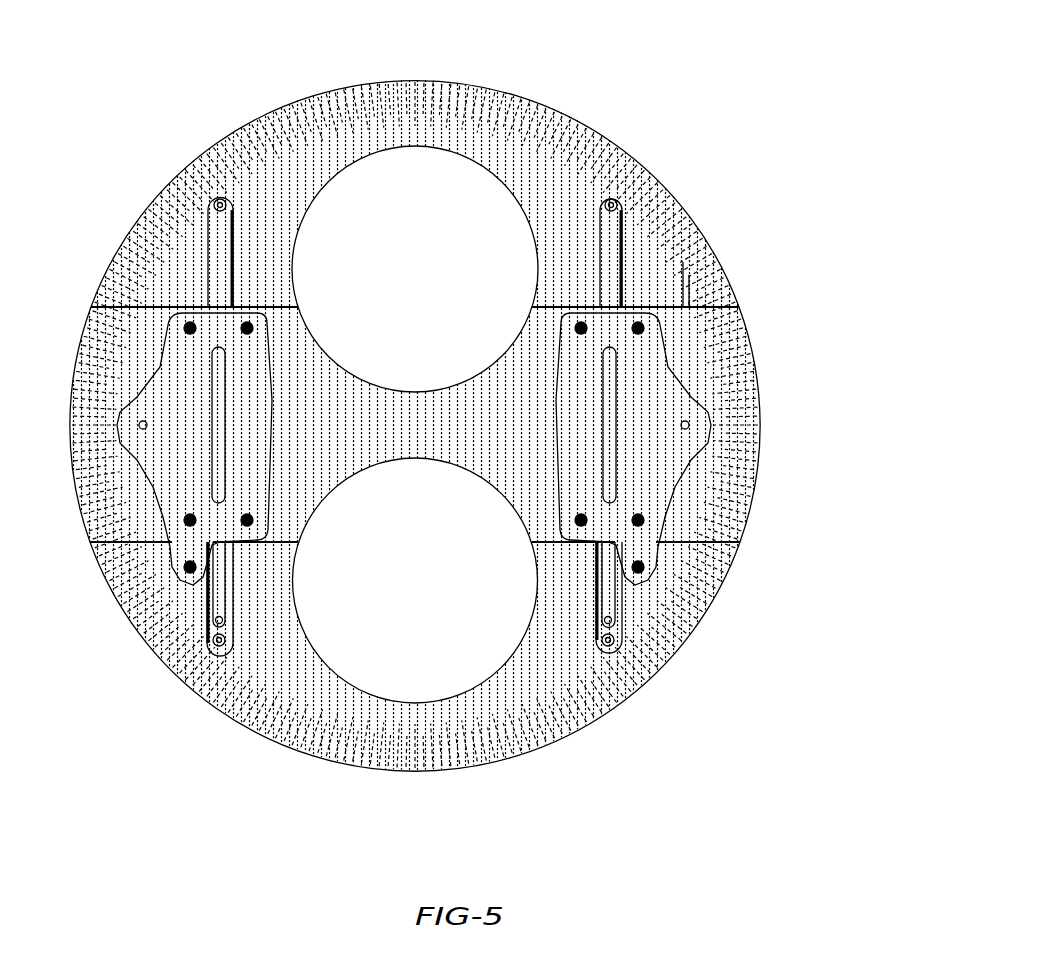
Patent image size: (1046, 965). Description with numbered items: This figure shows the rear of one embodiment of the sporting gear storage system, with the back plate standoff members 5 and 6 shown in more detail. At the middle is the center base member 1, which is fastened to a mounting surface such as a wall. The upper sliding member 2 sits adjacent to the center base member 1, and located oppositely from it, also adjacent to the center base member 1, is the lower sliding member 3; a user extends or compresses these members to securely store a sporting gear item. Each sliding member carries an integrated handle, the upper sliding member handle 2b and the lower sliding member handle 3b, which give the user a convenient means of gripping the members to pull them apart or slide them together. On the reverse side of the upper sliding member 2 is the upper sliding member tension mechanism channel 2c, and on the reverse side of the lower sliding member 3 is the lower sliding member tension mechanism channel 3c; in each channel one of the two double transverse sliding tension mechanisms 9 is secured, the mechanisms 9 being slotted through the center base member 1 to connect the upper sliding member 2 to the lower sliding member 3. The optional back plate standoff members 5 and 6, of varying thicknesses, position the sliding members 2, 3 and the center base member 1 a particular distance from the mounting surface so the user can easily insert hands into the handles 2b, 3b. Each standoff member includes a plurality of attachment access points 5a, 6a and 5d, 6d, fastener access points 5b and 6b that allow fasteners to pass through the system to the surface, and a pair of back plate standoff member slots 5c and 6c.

The center base member 1 is at (752, 323).
The upper sliding member 2 is at (672, 185).
The upper sliding member handle 2b is at (427, 100).
The upper sliding member tension mechanism channel 2c is at (622, 260).
The lower sliding member 3 is at (677, 657).
The lower sliding member handle 3b is at (417, 740).
The lower sliding member tension mechanism channel 3c is at (625, 603).
The back plate standoff member 5 is at (729, 449).
The attachment access point 5a is at (638, 567).
The fastener access point 5b is at (689, 428).
The back plate standoff member slot 5c is at (638, 332).
The attachment access point 5d is at (581, 330).
The back plate standoff member 6 is at (277, 435).
The attachment access point 6a is at (190, 567).
The fastener access point 6b is at (146, 428).
The back plate standoff member slot 6c is at (225, 362).
The attachment access point 6d is at (247, 330).
The double transverse sliding tension mechanism 9 is at (221, 267).